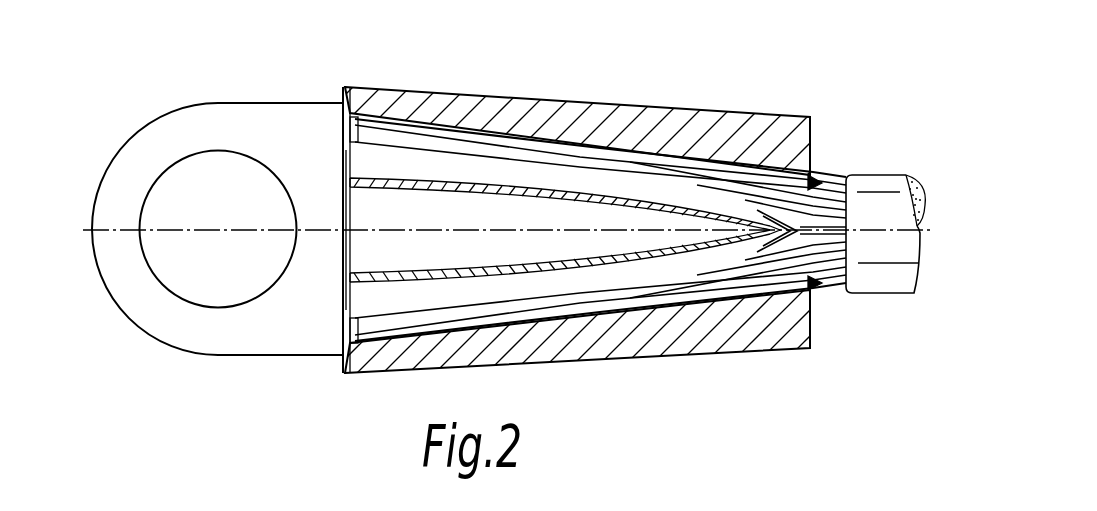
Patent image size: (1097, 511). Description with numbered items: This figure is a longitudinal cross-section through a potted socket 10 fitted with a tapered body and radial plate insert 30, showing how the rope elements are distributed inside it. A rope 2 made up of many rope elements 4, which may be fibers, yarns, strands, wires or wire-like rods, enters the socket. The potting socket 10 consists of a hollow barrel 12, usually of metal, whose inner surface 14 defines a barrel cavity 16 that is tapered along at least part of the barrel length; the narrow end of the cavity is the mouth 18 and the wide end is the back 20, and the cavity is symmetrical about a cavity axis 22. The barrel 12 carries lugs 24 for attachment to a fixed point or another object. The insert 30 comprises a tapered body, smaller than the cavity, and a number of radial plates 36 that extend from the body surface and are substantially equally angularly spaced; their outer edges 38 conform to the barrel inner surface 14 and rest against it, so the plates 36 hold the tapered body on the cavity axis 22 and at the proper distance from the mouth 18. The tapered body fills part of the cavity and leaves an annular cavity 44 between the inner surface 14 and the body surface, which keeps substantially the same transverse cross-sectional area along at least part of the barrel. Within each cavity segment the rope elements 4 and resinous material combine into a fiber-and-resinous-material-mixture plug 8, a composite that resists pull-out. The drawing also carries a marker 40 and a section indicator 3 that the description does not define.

The rope 2 is at (890, 185).
The rope elements 4 is at (838, 172).
The fiber-and-resinous-material-mixture plug 8 is at (773, 284).
The potting socket 10 is at (818, 308).
The barrel 12 is at (467, 88).
The inner surface 14 is at (524, 142).
The barrel cavity 16 is at (638, 106).
The mouth 18 is at (825, 182).
The back 20 is at (343, 137).
The cavity axis 22 is at (120, 228).
The lugs 24 is at (146, 124).
The tapered body and radial plate insert 30 is at (336, 274).
The radial plates 36 is at (343, 337).
The outer edges 38 is at (513, 323).
The lower spreader strip 40 is at (587, 313).
The annular cavity 44 is at (645, 300).
The section line 3- 3 is at (798, 112).